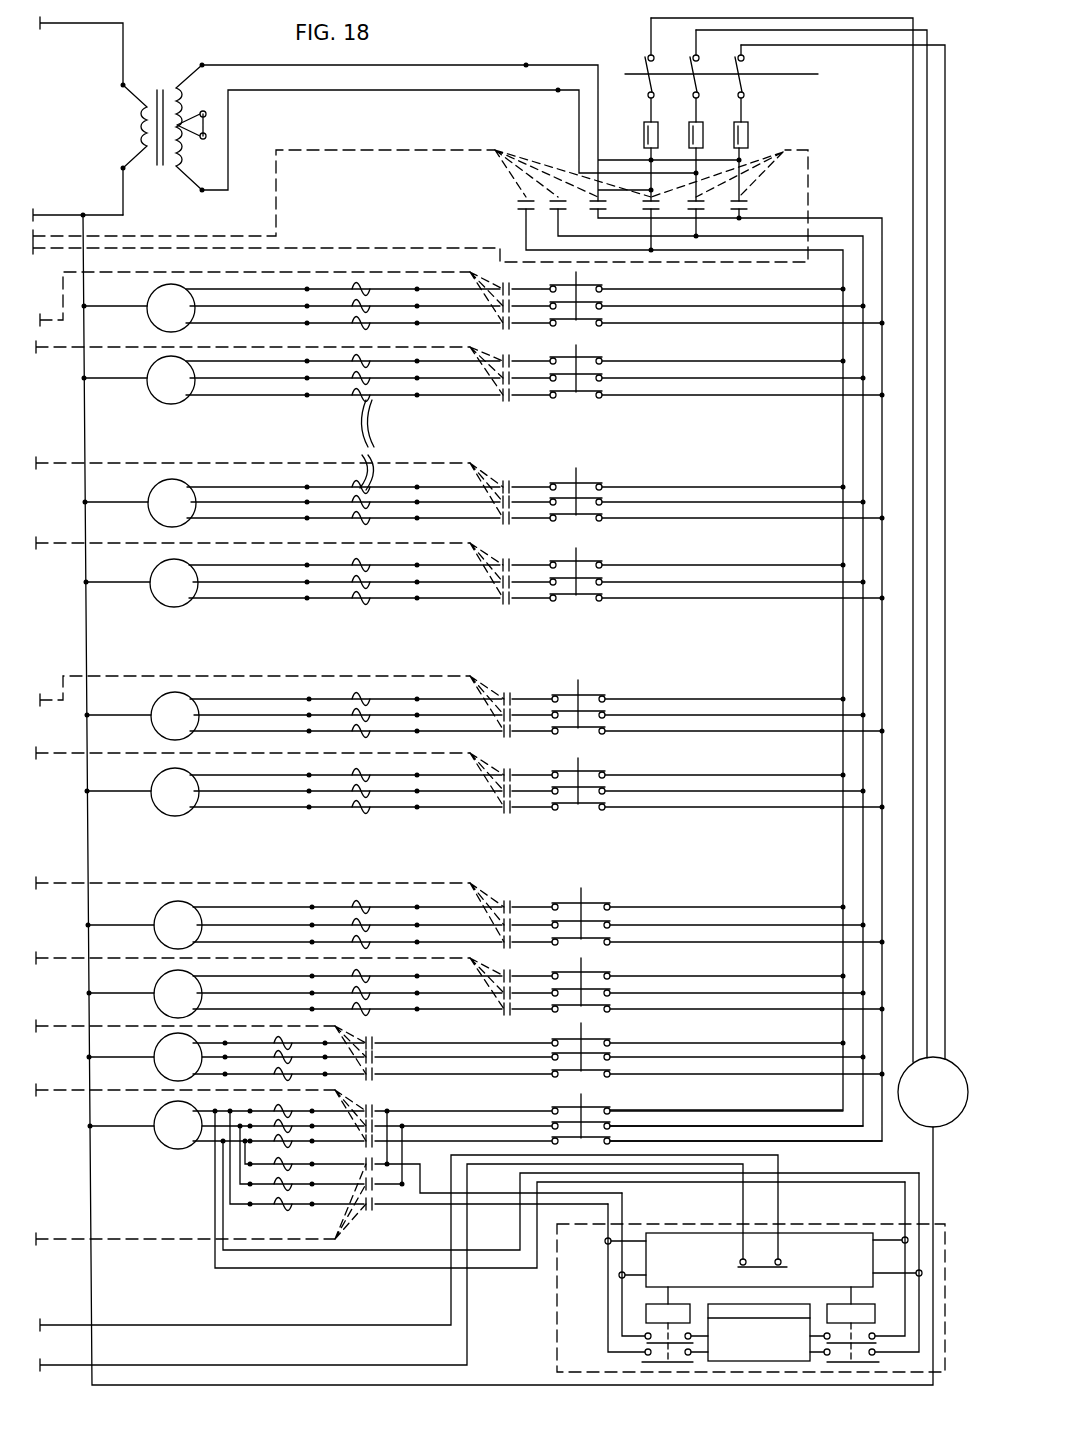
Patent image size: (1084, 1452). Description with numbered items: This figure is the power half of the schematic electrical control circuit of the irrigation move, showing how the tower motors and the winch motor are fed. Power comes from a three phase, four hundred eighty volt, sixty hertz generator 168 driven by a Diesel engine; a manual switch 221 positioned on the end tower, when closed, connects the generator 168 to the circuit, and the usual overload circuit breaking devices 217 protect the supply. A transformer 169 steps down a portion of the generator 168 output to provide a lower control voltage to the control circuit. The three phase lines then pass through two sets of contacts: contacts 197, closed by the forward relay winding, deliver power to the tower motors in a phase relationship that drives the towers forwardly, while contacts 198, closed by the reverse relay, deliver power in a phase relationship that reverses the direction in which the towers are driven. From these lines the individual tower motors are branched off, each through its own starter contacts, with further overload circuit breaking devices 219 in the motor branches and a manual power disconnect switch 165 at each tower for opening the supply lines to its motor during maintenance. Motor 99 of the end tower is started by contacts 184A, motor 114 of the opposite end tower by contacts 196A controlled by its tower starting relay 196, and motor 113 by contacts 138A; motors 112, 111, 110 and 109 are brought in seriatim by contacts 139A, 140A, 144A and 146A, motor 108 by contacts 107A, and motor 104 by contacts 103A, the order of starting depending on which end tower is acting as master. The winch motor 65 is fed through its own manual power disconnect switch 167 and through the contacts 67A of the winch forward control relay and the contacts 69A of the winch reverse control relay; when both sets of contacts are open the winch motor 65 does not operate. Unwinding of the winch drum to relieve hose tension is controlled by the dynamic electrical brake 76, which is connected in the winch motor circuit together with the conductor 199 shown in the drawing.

The transformer 169 is at (145, 90).
The manual switch 221 is at (641, 73).
The overload circuit breaking devices 217 is at (745, 134).
The contacts 197 is at (512, 203).
The contacts 198 is at (755, 203).
The motor 99 is at (148, 310).
The contacts 184A is at (509, 329).
The manual power disconnect switches 165 is at (600, 326).
The motor 114 is at (154, 399).
The contacts 196A is at (509, 401).
The motor 113 is at (172, 479).
The overload circuit breaking devices 219 is at (374, 445).
The contacts 138A is at (506, 478).
The motor 112 is at (159, 591).
The contacts 139A is at (509, 604).
The motor 111 is at (170, 692).
The contacts 140A is at (509, 692).
The motor 110 is at (169, 807).
The contacts 144A is at (509, 813).
The motor 109 is at (185, 900).
The contacts 146A is at (509, 900).
The motor 108 is at (154, 993).
The contacts 107A is at (517, 1026).
The motor 104 is at (154, 1056).
The contacts 103A is at (372, 1036).
The winch motor 65 is at (157, 1136).
The contacts 67A is at (372, 1104).
The contacts 69A is at (372, 1210).
The manual power disconnect switch 167 is at (608, 1107).
The power generator 168 is at (907, 1119).
The control line 199 is at (182, 1324).
The relay 196 is at (206, 1364).
The dynamic electrical brake 76 is at (552, 1318).